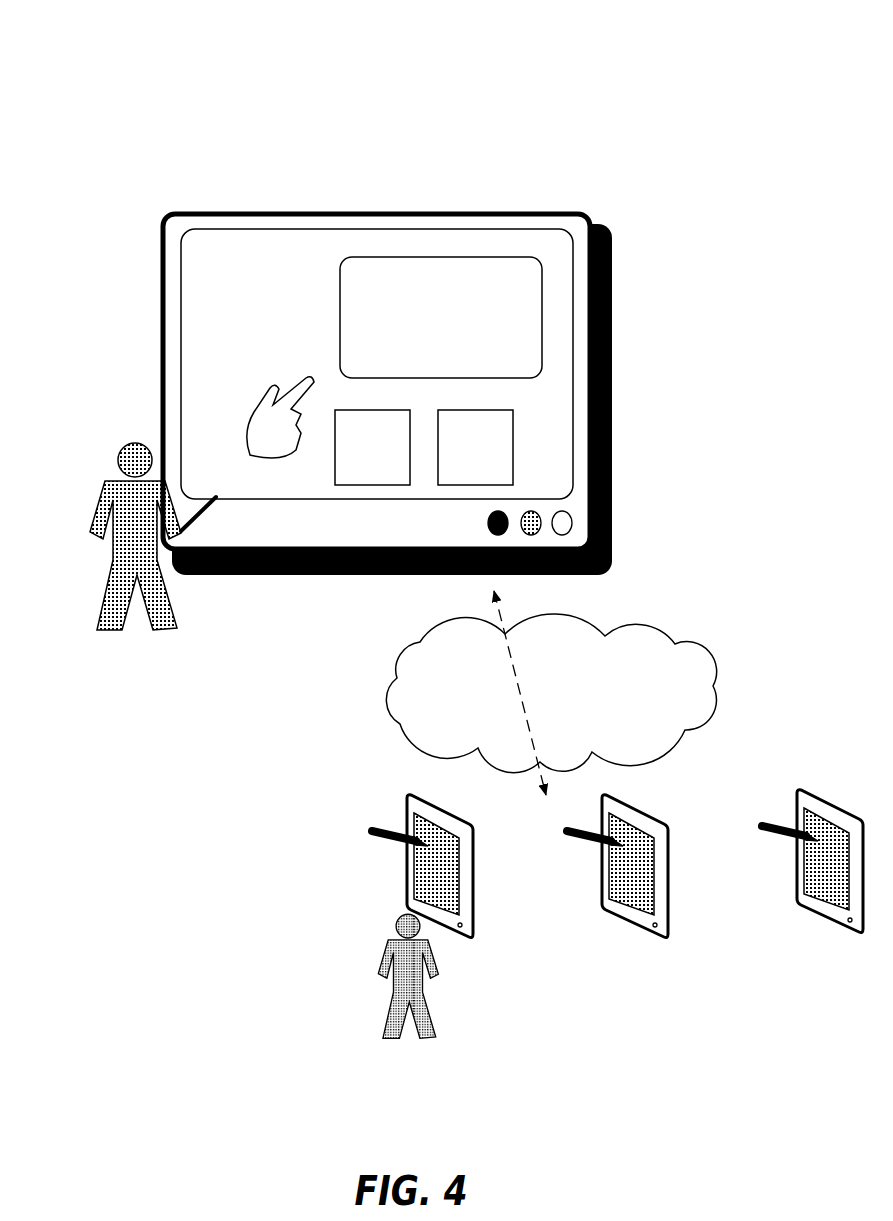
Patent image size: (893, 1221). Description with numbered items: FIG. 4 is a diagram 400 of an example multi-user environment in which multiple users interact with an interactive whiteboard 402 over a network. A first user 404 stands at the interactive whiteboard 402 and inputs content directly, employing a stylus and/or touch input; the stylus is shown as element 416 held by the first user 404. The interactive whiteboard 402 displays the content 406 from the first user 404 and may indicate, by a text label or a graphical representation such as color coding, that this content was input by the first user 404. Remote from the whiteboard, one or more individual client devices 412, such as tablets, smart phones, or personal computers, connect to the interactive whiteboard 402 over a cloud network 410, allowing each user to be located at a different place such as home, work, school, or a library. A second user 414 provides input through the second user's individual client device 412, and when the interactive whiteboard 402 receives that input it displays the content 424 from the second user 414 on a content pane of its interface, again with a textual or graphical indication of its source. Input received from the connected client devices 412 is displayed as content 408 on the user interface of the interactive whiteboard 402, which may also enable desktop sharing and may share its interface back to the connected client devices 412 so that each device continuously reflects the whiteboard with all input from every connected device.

The diagram 400 is at (729, 50).
The interactive whiteboard 402 is at (489, 202).
The first user 404 is at (138, 436).
The content from the first user 406 is at (351, 404).
The content 408 is at (351, 300).
The cloud network 410 is at (392, 632).
The individual client devices 412 is at (386, 802).
The second user 414 is at (376, 969).
The stylus 416 is at (232, 521).
The content from the second user 424 is at (515, 432).